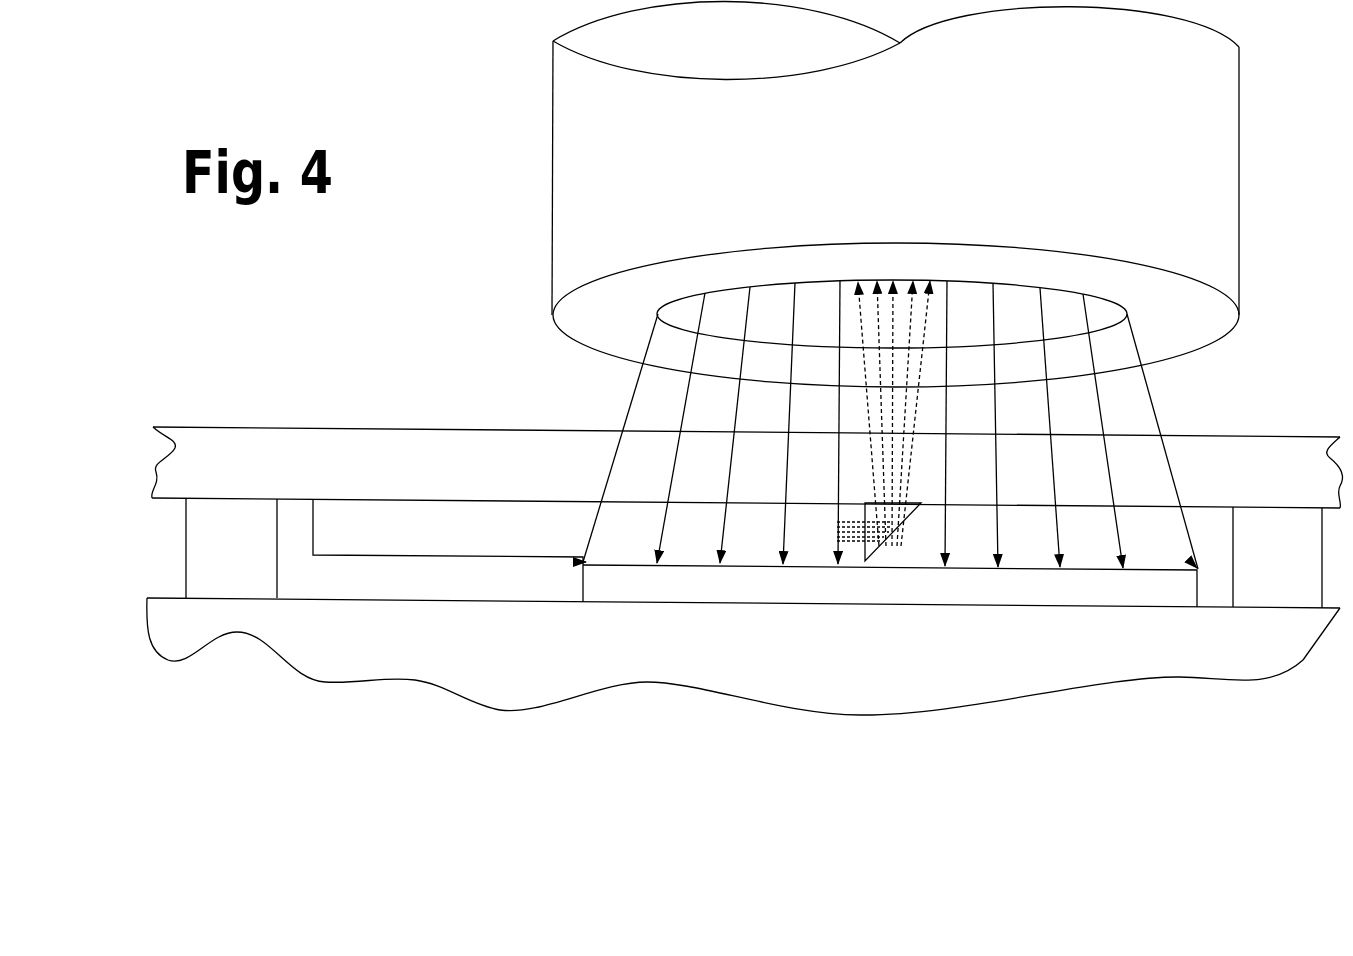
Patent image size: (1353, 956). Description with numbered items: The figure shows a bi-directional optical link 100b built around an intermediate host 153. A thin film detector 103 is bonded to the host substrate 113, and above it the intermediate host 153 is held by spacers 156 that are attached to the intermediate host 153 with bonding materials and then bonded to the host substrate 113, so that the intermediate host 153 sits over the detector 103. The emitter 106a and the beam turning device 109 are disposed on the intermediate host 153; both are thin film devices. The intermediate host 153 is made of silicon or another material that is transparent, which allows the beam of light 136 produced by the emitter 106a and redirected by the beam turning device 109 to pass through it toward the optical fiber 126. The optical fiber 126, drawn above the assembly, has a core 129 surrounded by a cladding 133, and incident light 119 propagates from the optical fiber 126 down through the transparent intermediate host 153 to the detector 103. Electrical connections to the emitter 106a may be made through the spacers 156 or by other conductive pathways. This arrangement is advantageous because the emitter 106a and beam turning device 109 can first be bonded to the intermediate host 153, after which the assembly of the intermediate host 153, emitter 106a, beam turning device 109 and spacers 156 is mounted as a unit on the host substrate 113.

The bi-directional optical link 100b is at (423, 323).
The thin film detector 103 is at (1072, 590).
The emitter 106a is at (438, 516).
The beam turning device 109 is at (895, 536).
The host substrate 113 is at (1082, 674).
The incident light 119 is at (1158, 408).
The optical fiber 126 is at (1220, 215).
The core 129 is at (730, 328).
The cladding 133 is at (596, 326).
The beam of light 136 is at (852, 548).
The intermediate host 153 is at (240, 431).
The spacers 156 is at (241, 584).